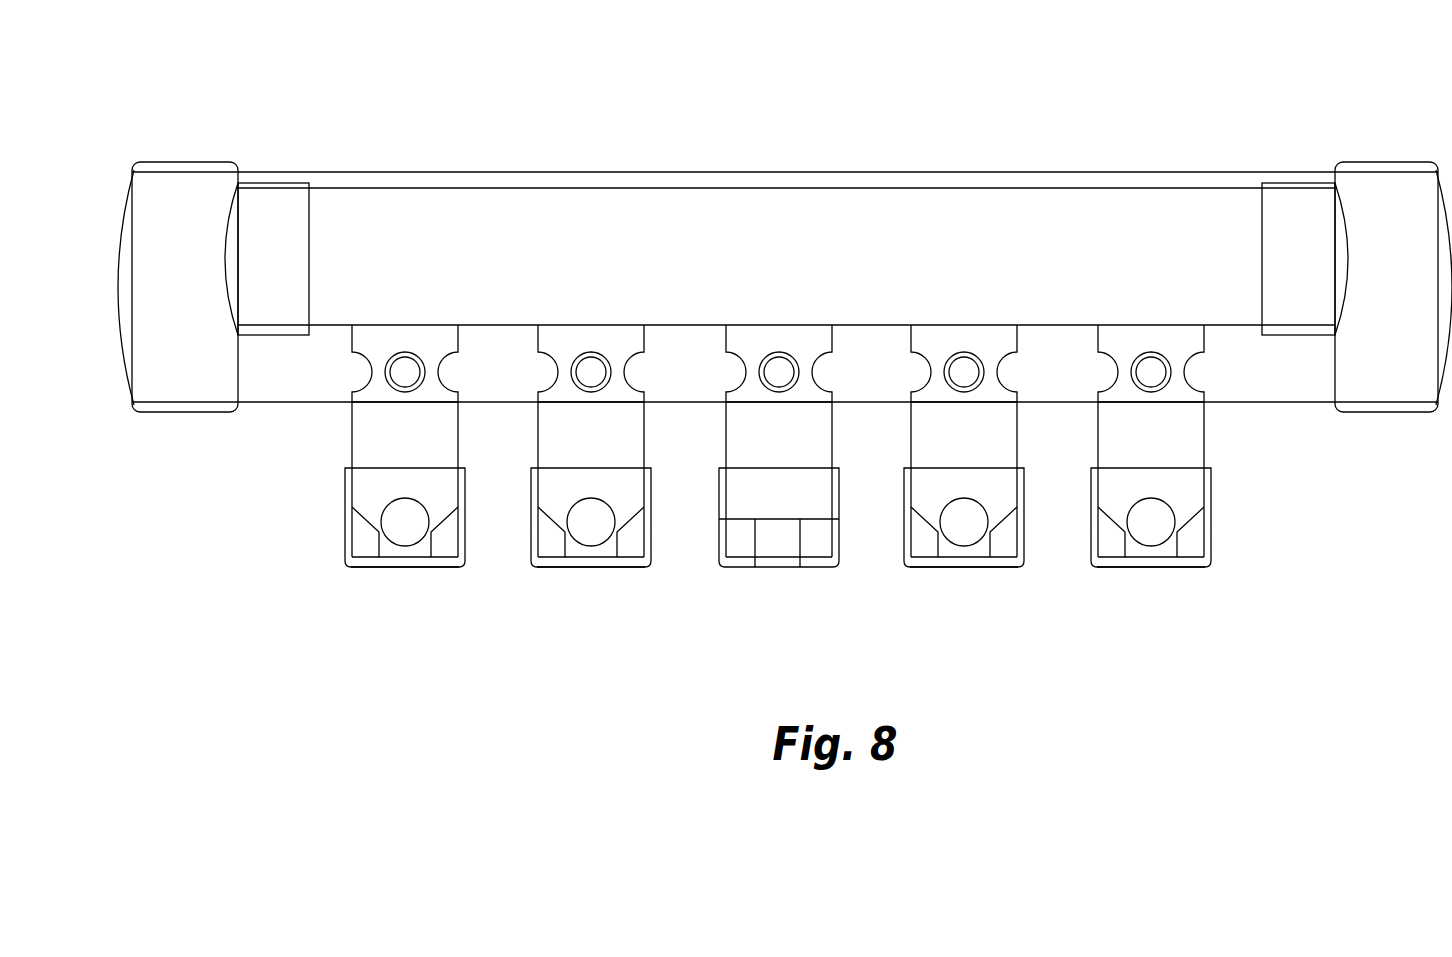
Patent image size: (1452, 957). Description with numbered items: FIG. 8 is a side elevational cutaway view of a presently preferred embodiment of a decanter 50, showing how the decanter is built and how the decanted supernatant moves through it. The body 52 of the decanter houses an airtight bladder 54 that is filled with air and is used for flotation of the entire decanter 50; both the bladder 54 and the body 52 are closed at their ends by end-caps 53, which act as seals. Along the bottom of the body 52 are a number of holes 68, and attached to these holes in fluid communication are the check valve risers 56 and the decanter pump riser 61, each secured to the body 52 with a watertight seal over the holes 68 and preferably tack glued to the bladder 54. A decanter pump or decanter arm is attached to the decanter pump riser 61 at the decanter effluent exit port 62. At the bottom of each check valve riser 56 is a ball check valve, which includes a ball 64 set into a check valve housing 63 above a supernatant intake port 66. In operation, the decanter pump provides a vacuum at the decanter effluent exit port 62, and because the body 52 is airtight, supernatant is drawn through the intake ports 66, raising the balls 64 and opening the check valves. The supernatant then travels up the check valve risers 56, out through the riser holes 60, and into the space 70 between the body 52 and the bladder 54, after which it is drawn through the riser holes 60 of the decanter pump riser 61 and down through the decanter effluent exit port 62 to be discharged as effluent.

The decanter 50 is at (1252, 139).
The body 52 is at (836, 168).
The end-caps 53 is at (171, 282).
The bladder 54 is at (777, 282).
The check valve risers 56 is at (393, 448).
The riser holes 60 is at (395, 383).
The decanter pump riser 61 is at (767, 448).
The decanter effluent exit port 62 is at (779, 578).
The check valve housing 63 is at (372, 540).
The ball 64 is at (393, 535).
The supernatant intake port 66 is at (405, 578).
The holes 68 is at (372, 407).
The space 70 is at (281, 384).